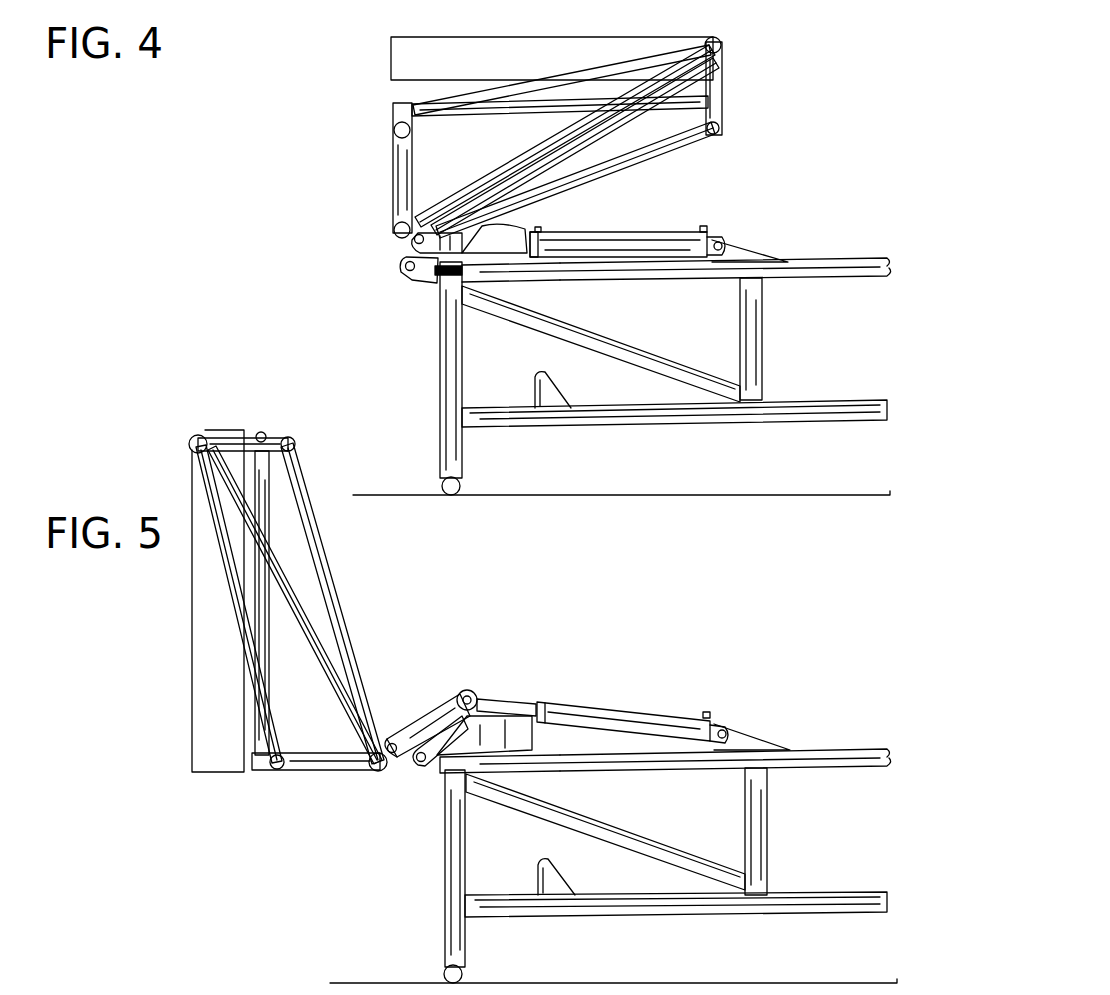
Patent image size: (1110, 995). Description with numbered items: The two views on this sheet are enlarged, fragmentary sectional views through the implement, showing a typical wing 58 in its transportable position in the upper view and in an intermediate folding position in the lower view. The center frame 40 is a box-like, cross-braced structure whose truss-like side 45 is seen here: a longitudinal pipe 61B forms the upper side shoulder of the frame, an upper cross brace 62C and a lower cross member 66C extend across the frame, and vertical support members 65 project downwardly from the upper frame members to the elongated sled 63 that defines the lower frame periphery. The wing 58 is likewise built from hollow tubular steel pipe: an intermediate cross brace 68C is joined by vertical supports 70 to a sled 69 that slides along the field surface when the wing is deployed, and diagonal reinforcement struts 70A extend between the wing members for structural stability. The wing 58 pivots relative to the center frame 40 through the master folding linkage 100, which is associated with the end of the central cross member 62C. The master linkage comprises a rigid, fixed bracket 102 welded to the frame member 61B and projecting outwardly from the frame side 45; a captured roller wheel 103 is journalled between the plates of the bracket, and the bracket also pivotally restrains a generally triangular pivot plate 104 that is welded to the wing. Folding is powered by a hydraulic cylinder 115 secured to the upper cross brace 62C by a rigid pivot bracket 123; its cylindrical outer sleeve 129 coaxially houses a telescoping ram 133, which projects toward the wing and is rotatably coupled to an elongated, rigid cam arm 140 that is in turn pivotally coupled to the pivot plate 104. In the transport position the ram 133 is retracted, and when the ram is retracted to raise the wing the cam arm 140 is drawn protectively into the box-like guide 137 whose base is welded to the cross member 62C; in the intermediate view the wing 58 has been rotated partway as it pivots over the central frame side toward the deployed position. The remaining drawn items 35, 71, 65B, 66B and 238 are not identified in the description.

In FIG. 4, the ground surface 35 is at (576, 496).
In FIG. 5, the ground surface 35 is at (385, 983).
In FIG. 4, the center frame 40 is at (625, 376).
In FIG. 5, the center frame 40 is at (635, 866).
In FIG. 4, the truss-like side 45 is at (625, 376).
In FIG. 5, the truss-like side 45 is at (635, 866).
In FIG. 4, the wing 58 is at (505, 68).
In FIG. 5, the wing 58 is at (352, 630).
In FIG. 4, the longitudinal pipe 61B is at (502, 276).
In FIG. 5, the longitudinal pipe 61B is at (505, 770).
In FIG. 4, the intermediate upper cross brace 62C is at (808, 280).
In FIG. 5, the intermediate upper cross brace 62C is at (808, 772).
In FIG. 4, the sled 63 is at (462, 488).
In FIG. 5, the sled 63 is at (465, 972).
In FIG. 4, the vertical support member 65 is at (463, 362).
In FIG. 5, the vertical support member 65 is at (466, 852).
In FIG. 4, the rear vertical post 65B is at (764, 352).
In FIG. 5, the rear vertical post 65B is at (768, 850).
In FIG. 4, the diagonal brace 66B is at (637, 350).
In FIG. 5, the diagonal brace 66B is at (648, 838).
In FIG. 4, the central lower frame cross member 66C is at (805, 422).
In FIG. 5, the central lower frame cross member 66C is at (805, 915).
In FIG. 4, the intermediate cross brace 68C is at (692, 142).
In FIG. 5, the intermediate cross brace 68C is at (337, 562).
In FIG. 4, the sled 69 is at (722, 44).
In FIG. 5, the sled 69 is at (200, 434).
In FIG. 4, the vertical support 70 is at (393, 165).
In FIG. 5, the vertical support 70 is at (255, 436).
In FIG. 4, the supportive reinforcement strut 70A is at (432, 118).
In FIG. 5, the supportive reinforcement strut 70A is at (326, 712).
In FIG. 4, the platform 71 is at (392, 56).
In FIG. 5, the platform 71 is at (193, 622).
In FIG. 4, the master folding linkage 100 is at (390, 285).
In FIG. 5, the master folding linkage 100 is at (450, 692).
In FIG. 4, the bracket 102 is at (420, 256).
In FIG. 5, the bracket 102 is at (427, 770).
In FIG. 4, the roller wheel 103 is at (405, 272).
In FIG. 5, the pivot plate 104 is at (376, 772).
In FIG. 4, the hydraulic cylinder 115 is at (652, 225).
In FIG. 5, the hydraulic cylinder 115 is at (637, 699).
In FIG. 4, the pivot bracket 123 is at (775, 256).
In FIG. 5, the pivot bracket 123 is at (772, 738).
In FIG. 4, the cylindrical outer sleeve 129 is at (652, 240).
In FIG. 5, the cylindrical outer sleeve 129 is at (660, 700).
In FIG. 5, the telescoping ram 133 is at (504, 700).
In FIG. 4, the guide 137 is at (520, 236).
In FIG. 5, the guide 137 is at (525, 740).
In FIG. 5, the cam arm 140 is at (430, 712).
In FIG. 4, the stop bracket 238 is at (556, 380).
In FIG. 5, the stop bracket 238 is at (560, 873).